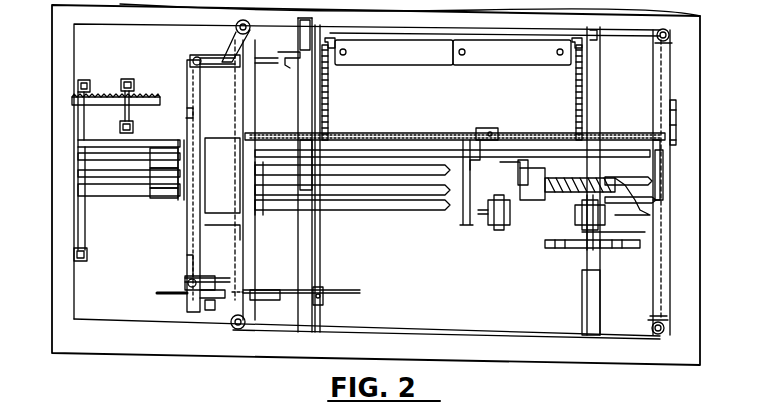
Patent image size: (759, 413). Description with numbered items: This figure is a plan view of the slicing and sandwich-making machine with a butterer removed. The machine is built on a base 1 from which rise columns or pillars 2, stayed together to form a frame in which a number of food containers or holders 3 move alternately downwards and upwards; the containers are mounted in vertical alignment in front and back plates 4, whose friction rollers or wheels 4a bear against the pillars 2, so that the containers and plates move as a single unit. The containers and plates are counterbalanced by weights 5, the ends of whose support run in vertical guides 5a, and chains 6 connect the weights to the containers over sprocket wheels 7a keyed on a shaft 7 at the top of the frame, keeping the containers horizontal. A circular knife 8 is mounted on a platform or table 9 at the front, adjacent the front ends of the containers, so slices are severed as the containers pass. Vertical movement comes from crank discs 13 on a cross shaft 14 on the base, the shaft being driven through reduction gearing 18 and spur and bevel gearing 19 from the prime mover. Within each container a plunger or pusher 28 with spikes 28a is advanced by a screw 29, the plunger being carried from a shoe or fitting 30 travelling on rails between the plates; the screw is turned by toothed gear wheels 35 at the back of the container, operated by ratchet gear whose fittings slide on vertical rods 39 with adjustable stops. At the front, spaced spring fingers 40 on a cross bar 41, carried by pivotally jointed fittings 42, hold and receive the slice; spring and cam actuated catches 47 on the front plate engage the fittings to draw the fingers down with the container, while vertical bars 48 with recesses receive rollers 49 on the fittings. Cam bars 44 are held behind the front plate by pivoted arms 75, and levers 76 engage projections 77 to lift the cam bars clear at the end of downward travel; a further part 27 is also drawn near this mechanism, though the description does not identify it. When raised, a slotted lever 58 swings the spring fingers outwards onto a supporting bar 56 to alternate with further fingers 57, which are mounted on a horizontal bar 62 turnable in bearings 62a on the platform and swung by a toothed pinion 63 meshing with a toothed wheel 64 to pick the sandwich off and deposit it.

The base 1 is at (62, 6).
The columns or pillars 2 is at (207, 25).
The food containers or holders 3 is at (240, 215).
The front and back plates 4 is at (243, 262).
The friction rollers or wheels 4a is at (243, 27).
The weights 5 is at (418, 52).
The vertical guides 5a is at (327, 40).
The chains 6 is at (328, 90).
The shaft 7 is at (440, 136).
The sprocket wheels 7a is at (310, 140).
The circular knife 8 is at (200, 80).
The platform or table 9 is at (217, 200).
The crank discs 13 is at (612, 248).
The cross shaft 14 is at (600, 230).
The reduction gearing 18 is at (510, 218).
The spur and bevel gearing 19 is at (550, 193).
The shaft 27 is at (333, 268).
The plunger or pusher 28 is at (472, 215).
The spikes 28a is at (465, 210).
The screw 29 is at (385, 133).
The shoe or fitting 30 is at (498, 133).
The toothed gear wheels 35 is at (663, 198).
The vertical rods 39 is at (674, 142).
The spring fingers 40 is at (213, 205).
The cross bar 41 is at (193, 110).
The pivotally jointed fittings 42 is at (190, 61).
The cam bars 44 is at (290, 65).
The spring and cam actuated catches 47 is at (200, 60).
The vertical bars 48 is at (212, 282).
The rollers 49 is at (200, 292).
The supporting bar 56 is at (113, 158).
The fingers 57 is at (100, 165).
The slotted lever 58 is at (200, 282).
The horizontal bar 62 is at (82, 210).
The bearings 62a is at (74, 254).
The toothed pinion 63 is at (94, 106).
The toothed wheel 64 is at (117, 100).
The pivoted arms 75 is at (293, 52).
The levers 76 is at (290, 300).
The projections 77 is at (278, 300).